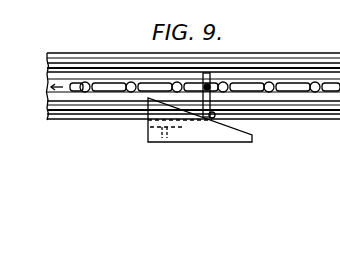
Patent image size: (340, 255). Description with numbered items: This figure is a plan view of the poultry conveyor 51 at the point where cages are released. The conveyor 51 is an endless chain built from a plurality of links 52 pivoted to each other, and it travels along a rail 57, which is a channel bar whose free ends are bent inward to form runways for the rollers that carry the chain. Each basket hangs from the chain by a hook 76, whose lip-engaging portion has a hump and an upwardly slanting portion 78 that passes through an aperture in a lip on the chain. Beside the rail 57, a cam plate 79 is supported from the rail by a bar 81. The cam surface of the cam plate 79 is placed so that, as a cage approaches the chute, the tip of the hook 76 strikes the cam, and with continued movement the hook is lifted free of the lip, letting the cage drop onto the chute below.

The conveyor 51 is at (44, 68).
The links 52 is at (152, 78).
The rail 57 is at (305, 58).
The hook 76 is at (210, 76).
The upwardly slanting portion 78 is at (211, 118).
The cam plate 79 is at (190, 146).
The bar 81 is at (149, 137).